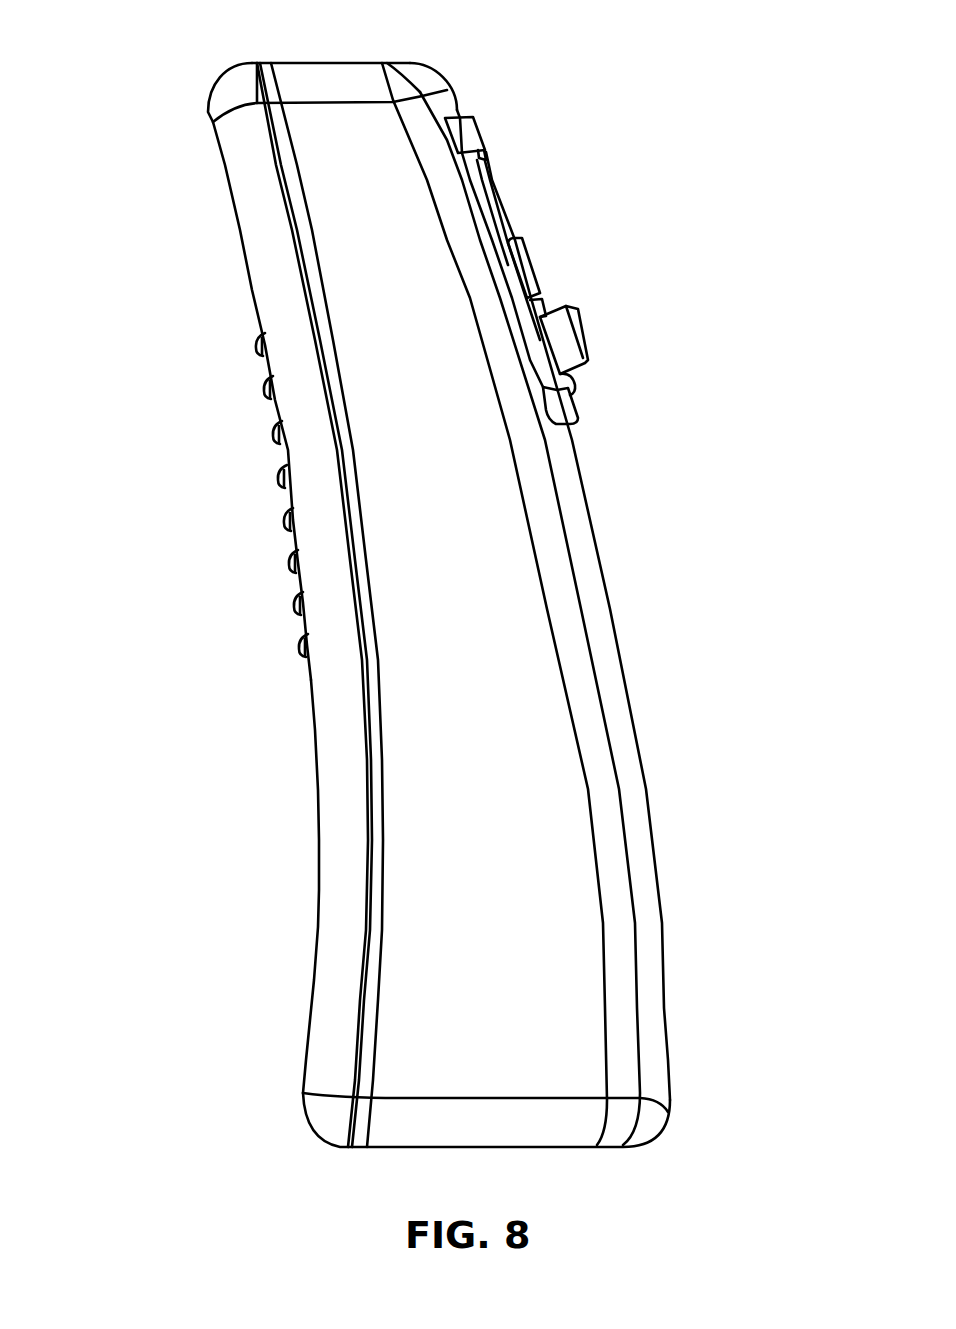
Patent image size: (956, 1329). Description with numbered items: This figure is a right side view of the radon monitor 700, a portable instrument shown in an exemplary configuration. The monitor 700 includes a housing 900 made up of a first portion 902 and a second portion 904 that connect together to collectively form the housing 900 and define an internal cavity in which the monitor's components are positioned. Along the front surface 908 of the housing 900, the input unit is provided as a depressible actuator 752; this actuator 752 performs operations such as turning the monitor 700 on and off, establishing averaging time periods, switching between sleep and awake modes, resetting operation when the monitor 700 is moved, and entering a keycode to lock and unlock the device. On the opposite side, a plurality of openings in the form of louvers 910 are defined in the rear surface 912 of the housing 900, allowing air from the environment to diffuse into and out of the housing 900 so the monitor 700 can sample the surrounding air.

The radon monitor 700 is at (775, 413).
The depressible actuator 752 is at (570, 338).
The housing 900 is at (527, 126).
The first portion 902 is at (335, 82).
The second portion 904 is at (247, 153).
The front surface 908 is at (678, 930).
The louvers 910 is at (283, 440).
The rear surface 912 is at (308, 838).